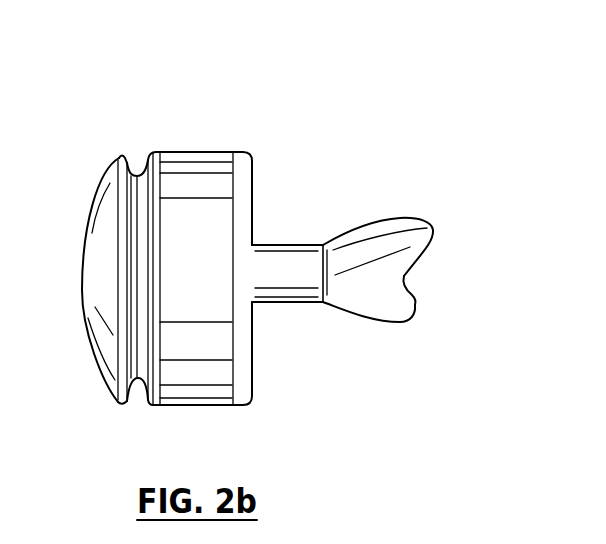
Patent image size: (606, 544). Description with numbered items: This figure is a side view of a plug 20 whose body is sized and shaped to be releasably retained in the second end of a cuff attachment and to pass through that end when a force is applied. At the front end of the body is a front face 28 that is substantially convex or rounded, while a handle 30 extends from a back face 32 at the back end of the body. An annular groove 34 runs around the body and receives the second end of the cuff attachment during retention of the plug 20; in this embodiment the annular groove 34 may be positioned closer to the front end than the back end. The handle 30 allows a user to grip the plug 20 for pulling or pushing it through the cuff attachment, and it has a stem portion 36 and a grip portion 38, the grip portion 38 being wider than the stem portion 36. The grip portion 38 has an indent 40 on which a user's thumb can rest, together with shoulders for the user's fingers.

The plug 20 is at (63, 200).
The front face 28 is at (82, 312).
The handle 30 is at (411, 217).
The back face 32 is at (253, 223).
The annular groove 34 is at (138, 387).
The stem portion 36 is at (287, 303).
The grip portion 38 is at (360, 295).
The indent 40 is at (405, 281).